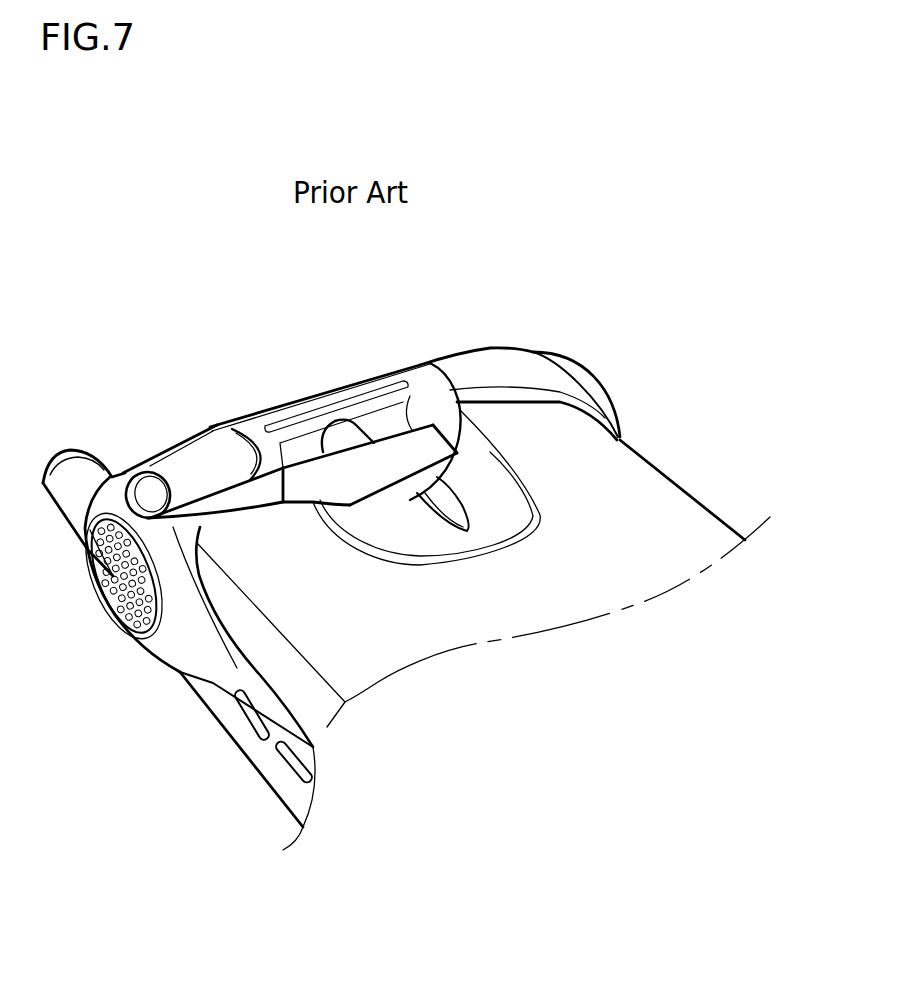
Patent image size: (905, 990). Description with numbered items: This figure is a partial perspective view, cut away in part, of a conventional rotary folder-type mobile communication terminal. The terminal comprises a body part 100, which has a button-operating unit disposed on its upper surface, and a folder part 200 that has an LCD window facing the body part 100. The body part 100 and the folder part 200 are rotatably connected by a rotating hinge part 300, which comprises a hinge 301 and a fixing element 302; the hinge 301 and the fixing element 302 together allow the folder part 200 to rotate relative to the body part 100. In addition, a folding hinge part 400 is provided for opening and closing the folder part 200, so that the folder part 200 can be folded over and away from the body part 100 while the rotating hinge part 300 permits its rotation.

The body part 100 is at (236, 747).
The folder part 200 is at (663, 488).
The rotating hinge part 300 is at (415, 312).
The hinge 301 is at (336, 420).
The fixing element 302 is at (417, 436).
The folding hinge part 400 is at (188, 464).